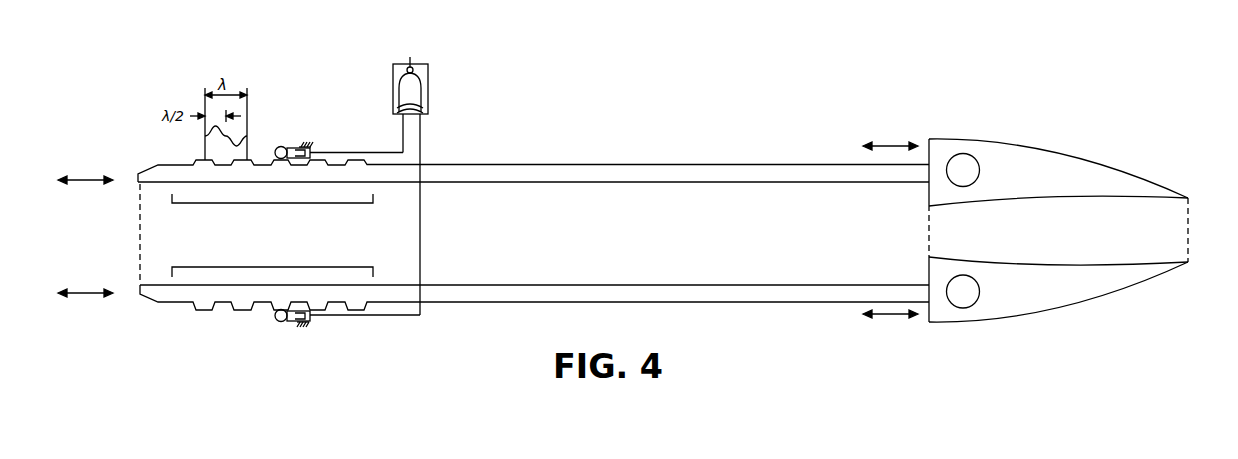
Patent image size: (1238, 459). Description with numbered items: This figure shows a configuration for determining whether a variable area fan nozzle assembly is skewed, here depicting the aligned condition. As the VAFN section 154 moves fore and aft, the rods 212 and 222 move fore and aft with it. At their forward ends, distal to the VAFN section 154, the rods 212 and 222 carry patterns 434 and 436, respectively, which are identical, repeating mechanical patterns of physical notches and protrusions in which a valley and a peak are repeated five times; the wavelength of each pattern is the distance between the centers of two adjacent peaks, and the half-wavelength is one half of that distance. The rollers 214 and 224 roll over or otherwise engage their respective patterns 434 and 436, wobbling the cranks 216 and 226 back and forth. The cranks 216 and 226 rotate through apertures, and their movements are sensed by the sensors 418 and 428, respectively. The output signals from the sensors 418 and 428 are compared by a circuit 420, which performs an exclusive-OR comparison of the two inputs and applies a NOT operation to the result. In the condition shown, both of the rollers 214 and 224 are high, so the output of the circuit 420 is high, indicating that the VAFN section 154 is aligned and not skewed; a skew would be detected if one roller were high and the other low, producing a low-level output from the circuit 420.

The VAFN section 154 is at (1126, 198).
The rod 212 is at (591, 183).
The roller 214 is at (277, 146).
The crank 216 is at (295, 147).
The rod 222 is at (625, 283).
The roller 224 is at (278, 320).
The crank 226 is at (290, 322).
The sensor 418 is at (307, 144).
The circuit 420 is at (429, 93).
The sensor 428 is at (308, 326).
The pattern 434 is at (284, 205).
The pattern 436 is at (238, 266).